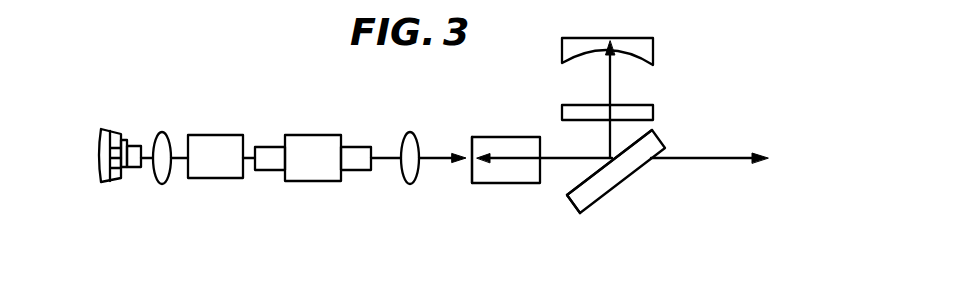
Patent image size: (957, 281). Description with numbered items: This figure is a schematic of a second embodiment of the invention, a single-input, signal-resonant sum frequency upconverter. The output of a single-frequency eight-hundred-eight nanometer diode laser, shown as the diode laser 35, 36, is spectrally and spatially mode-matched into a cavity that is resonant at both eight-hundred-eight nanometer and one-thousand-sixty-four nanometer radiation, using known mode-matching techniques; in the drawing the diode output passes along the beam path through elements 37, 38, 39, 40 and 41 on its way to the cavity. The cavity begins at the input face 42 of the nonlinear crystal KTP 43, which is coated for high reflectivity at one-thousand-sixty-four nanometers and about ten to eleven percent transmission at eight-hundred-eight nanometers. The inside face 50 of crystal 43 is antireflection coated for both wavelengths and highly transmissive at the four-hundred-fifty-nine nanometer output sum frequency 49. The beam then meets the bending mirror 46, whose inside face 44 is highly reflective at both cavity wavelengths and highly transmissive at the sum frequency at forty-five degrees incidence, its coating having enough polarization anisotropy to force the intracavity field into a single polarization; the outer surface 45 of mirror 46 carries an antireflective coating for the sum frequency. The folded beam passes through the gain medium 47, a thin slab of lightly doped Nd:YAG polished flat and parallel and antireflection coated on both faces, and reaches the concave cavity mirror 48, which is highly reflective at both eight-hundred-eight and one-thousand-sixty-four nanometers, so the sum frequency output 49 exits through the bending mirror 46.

The single-frequency diode laser 35 is at (102, 130).
The single-frequency diode laser 36 is at (136, 147).
The diode output beam 37 is at (149, 161).
The collimating lens 38 is at (165, 183).
The optical isolator 39 is at (217, 135).
The optical modulator 40 is at (307, 135).
The focusing lens 41 is at (408, 185).
The input face 42 is at (472, 177).
The nonlinear crystal KTP 43 is at (522, 177).
The inside face 44 is at (572, 193).
The outer surface 45 is at (613, 188).
The bending mirror 46 is at (628, 163).
The gain medium 47 is at (655, 112).
The cavity mirror 48 is at (658, 64).
The output sum frequency 49 is at (731, 165).
The inside face 50 is at (548, 137).